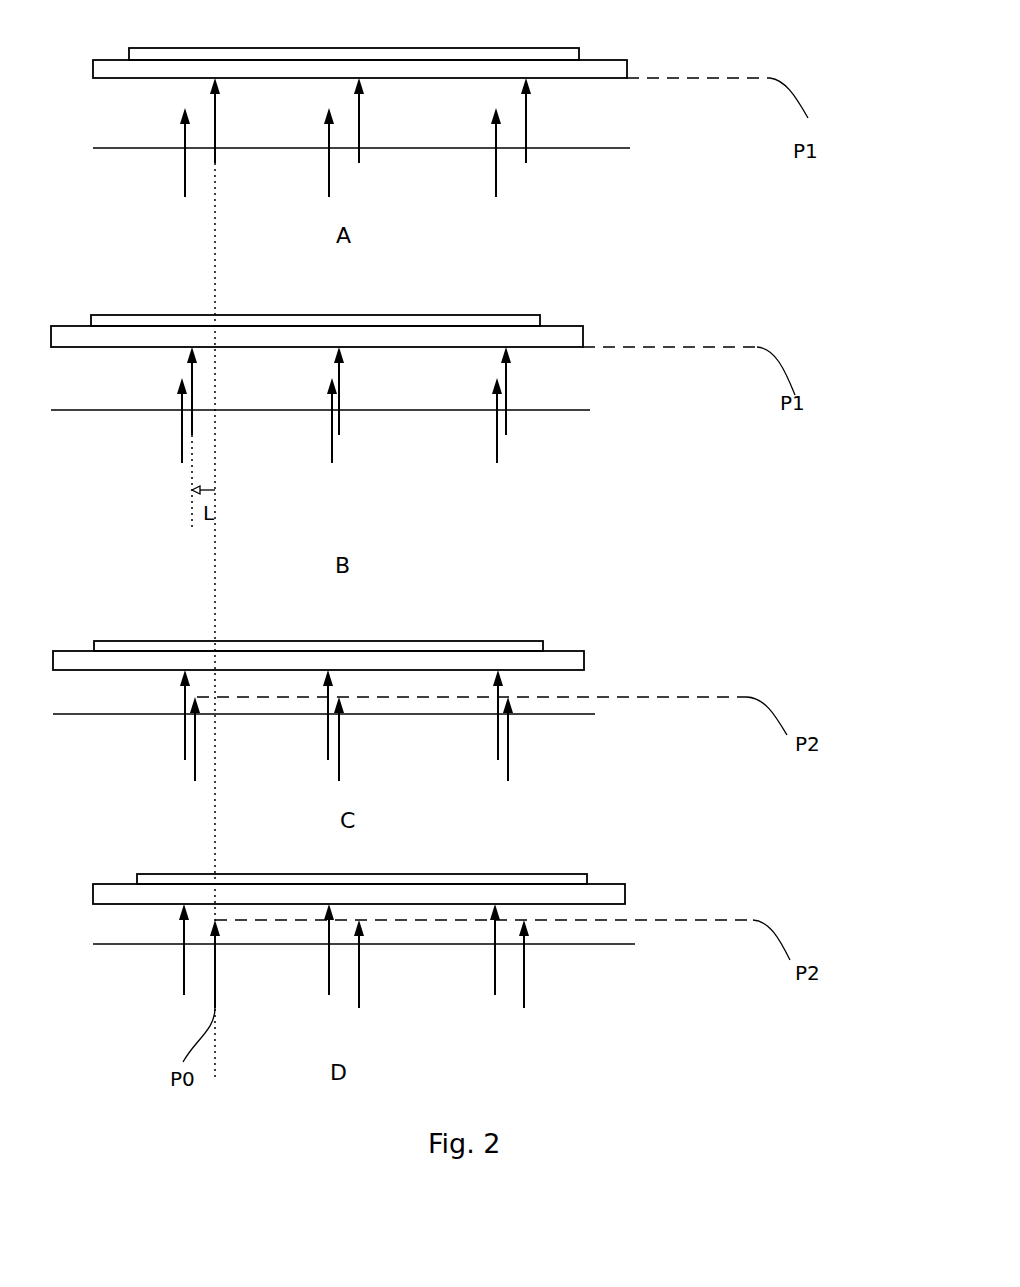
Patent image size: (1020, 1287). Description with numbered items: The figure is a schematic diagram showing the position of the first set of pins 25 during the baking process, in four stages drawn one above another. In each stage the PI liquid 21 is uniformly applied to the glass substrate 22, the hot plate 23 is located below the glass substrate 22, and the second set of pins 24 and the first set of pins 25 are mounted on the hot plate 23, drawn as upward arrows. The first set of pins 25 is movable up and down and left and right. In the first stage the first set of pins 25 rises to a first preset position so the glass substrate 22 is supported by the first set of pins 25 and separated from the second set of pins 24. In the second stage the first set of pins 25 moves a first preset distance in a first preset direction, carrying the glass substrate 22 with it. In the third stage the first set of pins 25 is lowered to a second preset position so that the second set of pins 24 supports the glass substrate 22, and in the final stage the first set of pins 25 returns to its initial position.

The PI liquid 21 is at (579, 48).
The glass substrate 22 is at (627, 75).
The hot plate 23 is at (630, 148).
The second set of pins 24 is at (326, 551).
The first set of pins 25 is at (375, 543).